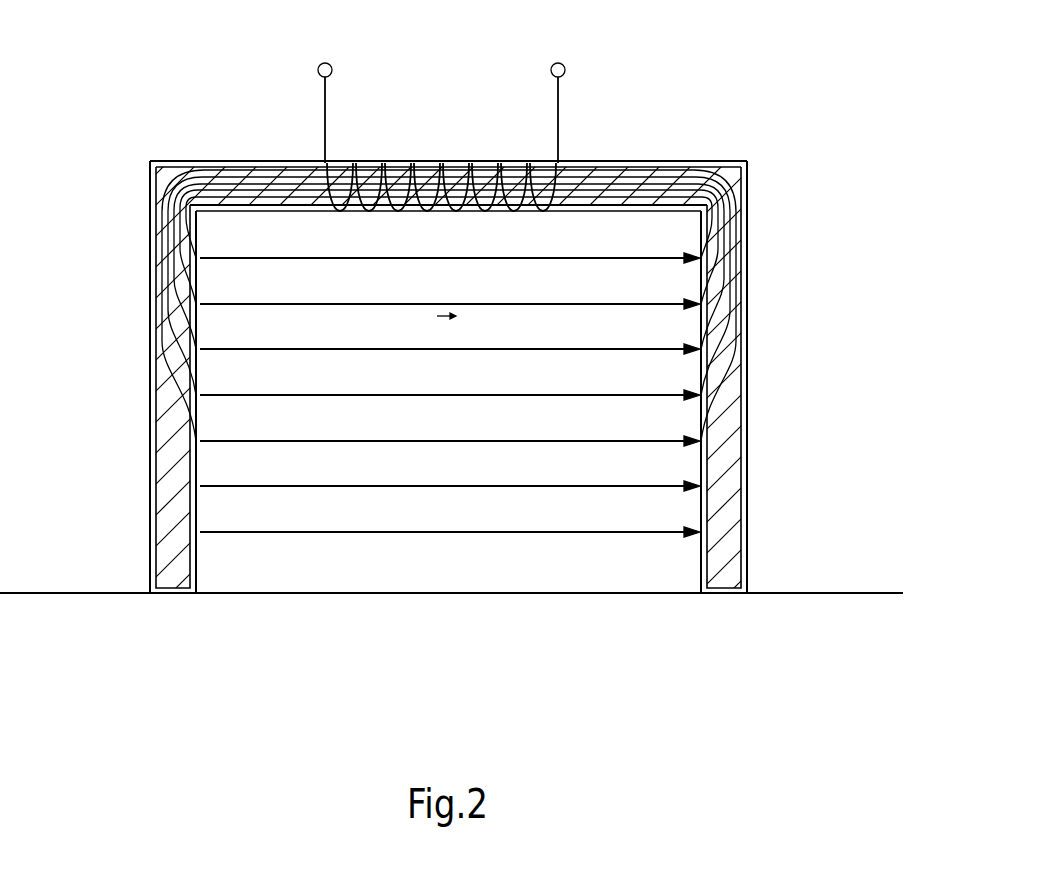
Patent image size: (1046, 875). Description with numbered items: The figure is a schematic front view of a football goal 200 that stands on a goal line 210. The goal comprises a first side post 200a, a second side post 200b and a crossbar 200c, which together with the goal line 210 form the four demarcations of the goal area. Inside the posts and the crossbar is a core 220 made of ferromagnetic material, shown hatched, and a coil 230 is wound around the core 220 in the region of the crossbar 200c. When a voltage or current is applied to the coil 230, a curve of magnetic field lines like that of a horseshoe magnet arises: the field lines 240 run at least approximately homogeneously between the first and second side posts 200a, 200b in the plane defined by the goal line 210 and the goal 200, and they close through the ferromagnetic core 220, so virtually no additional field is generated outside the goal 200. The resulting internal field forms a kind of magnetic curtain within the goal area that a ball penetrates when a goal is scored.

The football goal 200 is at (696, 88).
The first side post 200a is at (150, 527).
The second side post 200b is at (747, 562).
The crossbar 200c is at (223, 162).
The goal line 210 is at (878, 594).
The core 220 is at (747, 241).
The coil 230 is at (560, 162).
The field lines 240 is at (452, 487).